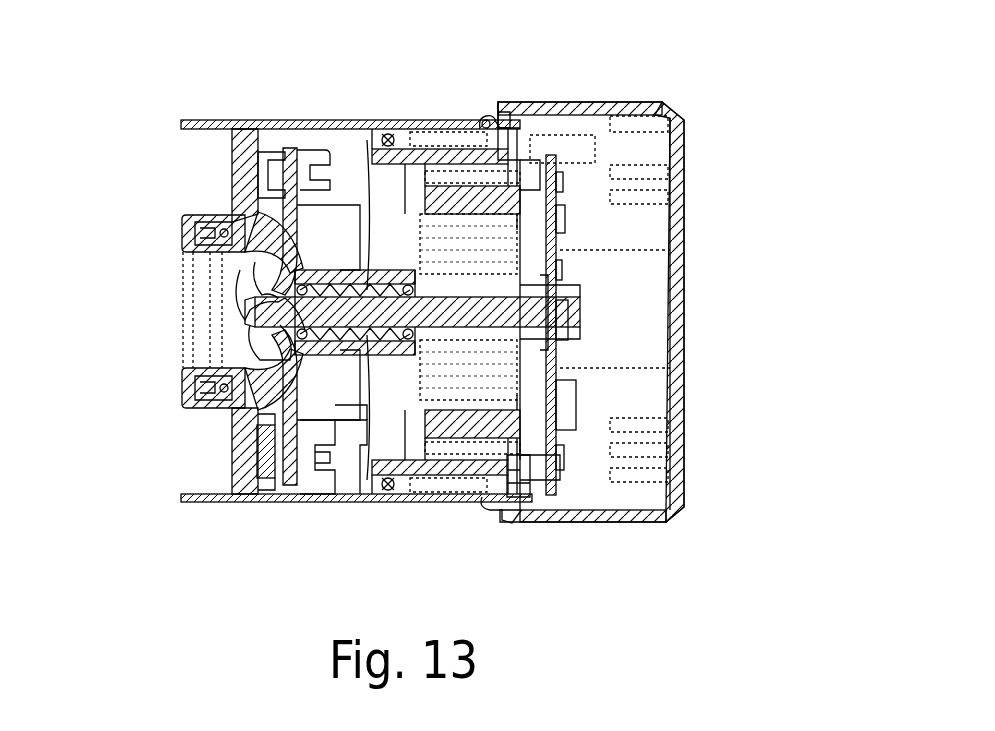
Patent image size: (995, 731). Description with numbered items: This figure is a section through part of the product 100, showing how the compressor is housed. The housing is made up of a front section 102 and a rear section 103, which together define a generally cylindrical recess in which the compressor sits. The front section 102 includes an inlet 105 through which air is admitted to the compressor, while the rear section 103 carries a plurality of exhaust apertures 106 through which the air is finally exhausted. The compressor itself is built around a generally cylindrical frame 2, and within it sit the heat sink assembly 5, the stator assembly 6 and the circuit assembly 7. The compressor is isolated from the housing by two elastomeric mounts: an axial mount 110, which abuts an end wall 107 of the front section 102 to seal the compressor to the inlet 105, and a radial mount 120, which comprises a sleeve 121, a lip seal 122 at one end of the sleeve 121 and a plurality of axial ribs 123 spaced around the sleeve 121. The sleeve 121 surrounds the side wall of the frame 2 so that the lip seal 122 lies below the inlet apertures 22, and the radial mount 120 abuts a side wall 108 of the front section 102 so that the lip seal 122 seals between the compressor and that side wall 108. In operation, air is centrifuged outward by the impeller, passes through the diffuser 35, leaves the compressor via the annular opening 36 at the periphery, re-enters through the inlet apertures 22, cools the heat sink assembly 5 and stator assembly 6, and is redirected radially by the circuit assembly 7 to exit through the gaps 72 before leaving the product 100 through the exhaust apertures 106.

The product 100 is at (124, 114).
The front section 102 is at (204, 120).
The rear section 103 is at (597, 105).
The exhaust apertures 106 is at (630, 178).
The circuit assembly 7 is at (549, 130).
The stator assembly 6 is at (486, 118).
The frame 2 is at (444, 120).
The heat sink assembly 5 is at (352, 135).
The radial mount 120 is at (392, 120).
The sleeve 121 is at (473, 494).
The lip seal 122 is at (393, 494).
The axial ribs 123 is at (432, 495).
The side wall 108 is at (302, 120).
The axial mount 110 is at (232, 171).
The inlet 105 is at (178, 307).
The end wall 107 is at (183, 387).
The diffuser 35 is at (275, 447).
The annular opening 36 is at (290, 494).
The inlet apertures 22 is at (350, 494).
The gaps 72 is at (530, 470).